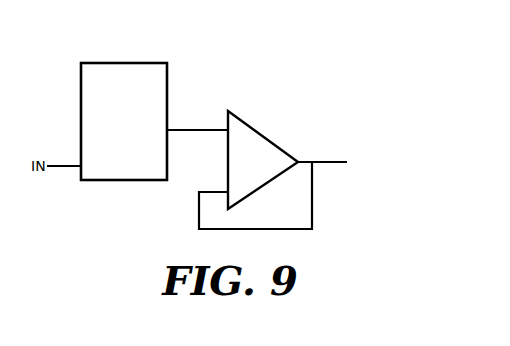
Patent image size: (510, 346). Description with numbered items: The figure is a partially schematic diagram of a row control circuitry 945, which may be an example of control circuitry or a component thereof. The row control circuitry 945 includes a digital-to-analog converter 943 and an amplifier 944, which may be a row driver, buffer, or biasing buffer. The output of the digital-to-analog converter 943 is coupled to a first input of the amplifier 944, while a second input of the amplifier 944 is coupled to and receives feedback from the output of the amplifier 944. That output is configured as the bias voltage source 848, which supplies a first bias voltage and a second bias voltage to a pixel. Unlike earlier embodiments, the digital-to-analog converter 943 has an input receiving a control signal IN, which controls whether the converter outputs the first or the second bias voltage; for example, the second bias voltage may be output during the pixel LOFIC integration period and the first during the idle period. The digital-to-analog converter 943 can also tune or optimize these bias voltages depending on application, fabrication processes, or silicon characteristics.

The DAC 943 is at (92, 63).
The amplifier 944 is at (248, 124).
The bias voltage source 848 is at (372, 148).
The row control circuitry 945 is at (323, 68).